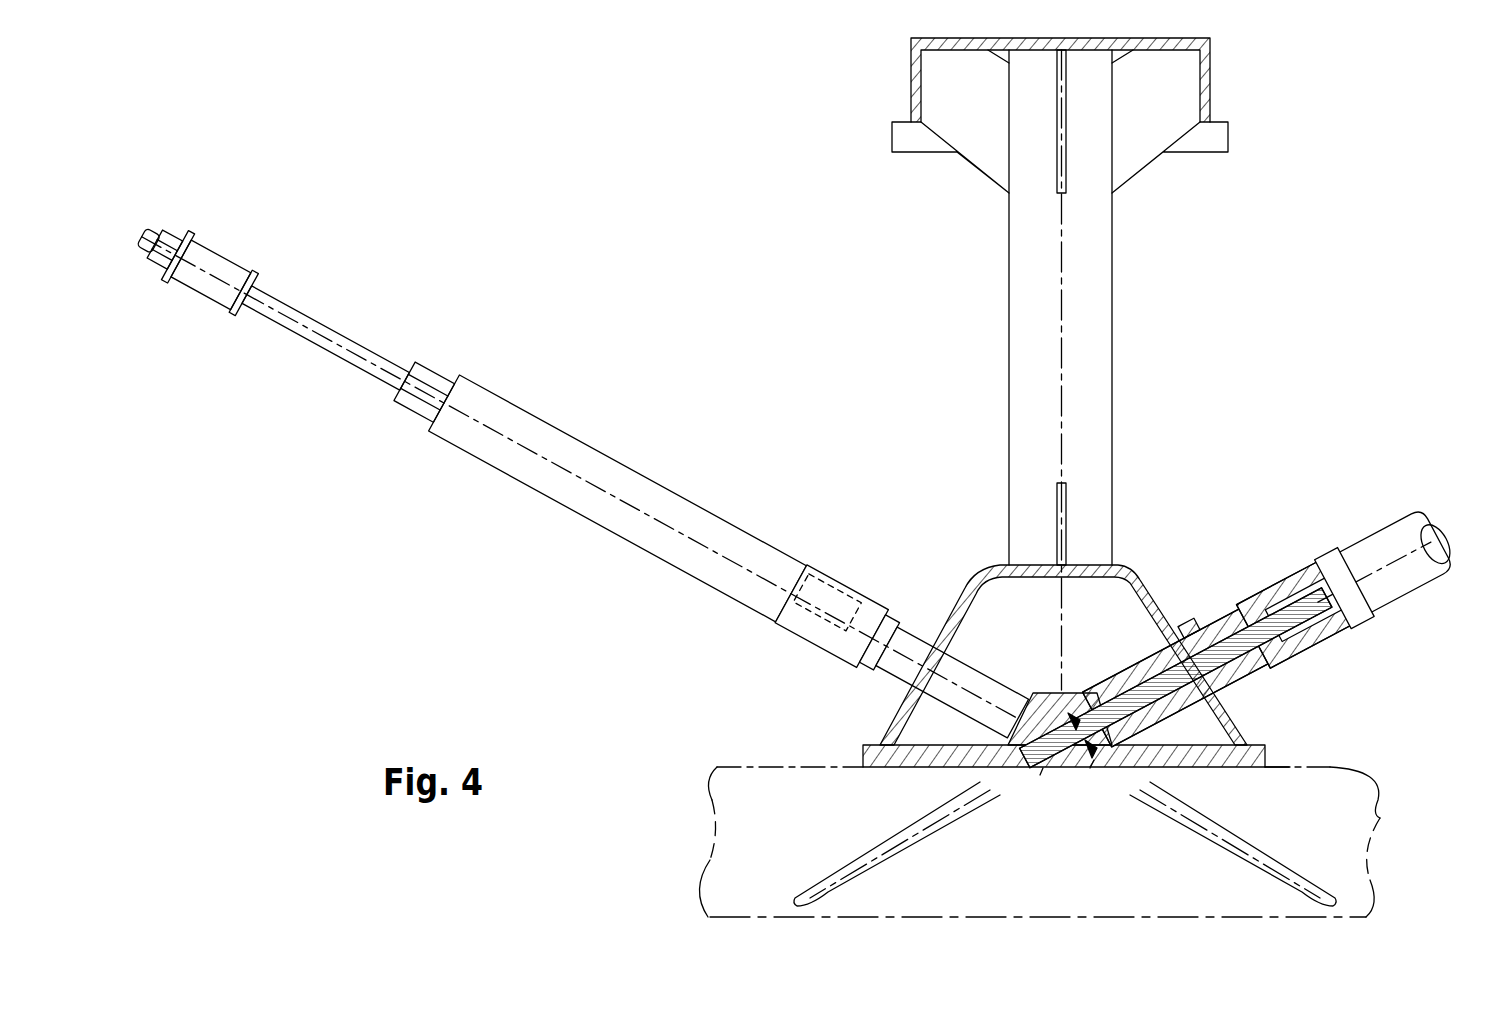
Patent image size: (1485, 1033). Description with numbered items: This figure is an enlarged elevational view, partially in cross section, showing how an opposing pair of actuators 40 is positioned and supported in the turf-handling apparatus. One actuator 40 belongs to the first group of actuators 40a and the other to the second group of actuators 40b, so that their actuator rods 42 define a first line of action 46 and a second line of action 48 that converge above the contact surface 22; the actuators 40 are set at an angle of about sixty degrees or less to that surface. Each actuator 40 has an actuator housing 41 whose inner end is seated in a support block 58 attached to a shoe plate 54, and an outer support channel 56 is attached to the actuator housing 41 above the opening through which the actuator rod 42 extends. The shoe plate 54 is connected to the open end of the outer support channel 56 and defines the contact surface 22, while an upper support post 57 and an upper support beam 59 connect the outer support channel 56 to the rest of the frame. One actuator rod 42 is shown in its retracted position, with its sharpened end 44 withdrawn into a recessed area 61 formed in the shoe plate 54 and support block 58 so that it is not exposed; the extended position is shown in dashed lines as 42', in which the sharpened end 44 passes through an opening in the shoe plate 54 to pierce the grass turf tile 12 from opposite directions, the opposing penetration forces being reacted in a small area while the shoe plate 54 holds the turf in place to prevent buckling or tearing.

The grass turf tile 12 is at (1382, 816).
The contact surface 22 is at (1233, 768).
The actuator 40 is at (800, 537).
The first group of actuators 40a is at (1242, 657).
The second group of actuators 40b is at (579, 477).
The actuator housing 41 is at (873, 610).
The actuator rod 42 is at (1176, 678).
The actuator rod in extended position 42' is at (1065, 846).
The sharpened end 44 is at (1050, 766).
The first line of action 46 is at (1396, 558).
The second line of action 48 is at (697, 558).
The shoe plate 54 is at (1265, 752).
The outer support channel 56 is at (1150, 582).
The upper support post 57 is at (1108, 243).
The support block 58 is at (1050, 692).
The upper support beam 59 is at (1208, 62).
The recessed area 61 is at (1022, 753).